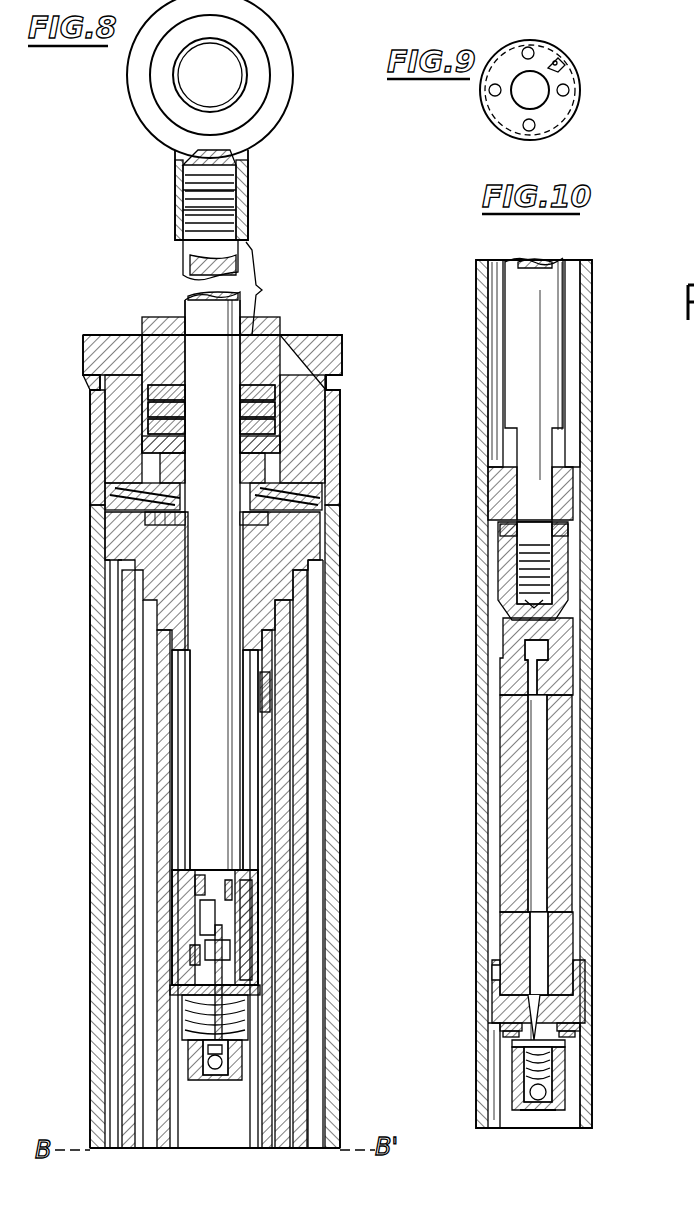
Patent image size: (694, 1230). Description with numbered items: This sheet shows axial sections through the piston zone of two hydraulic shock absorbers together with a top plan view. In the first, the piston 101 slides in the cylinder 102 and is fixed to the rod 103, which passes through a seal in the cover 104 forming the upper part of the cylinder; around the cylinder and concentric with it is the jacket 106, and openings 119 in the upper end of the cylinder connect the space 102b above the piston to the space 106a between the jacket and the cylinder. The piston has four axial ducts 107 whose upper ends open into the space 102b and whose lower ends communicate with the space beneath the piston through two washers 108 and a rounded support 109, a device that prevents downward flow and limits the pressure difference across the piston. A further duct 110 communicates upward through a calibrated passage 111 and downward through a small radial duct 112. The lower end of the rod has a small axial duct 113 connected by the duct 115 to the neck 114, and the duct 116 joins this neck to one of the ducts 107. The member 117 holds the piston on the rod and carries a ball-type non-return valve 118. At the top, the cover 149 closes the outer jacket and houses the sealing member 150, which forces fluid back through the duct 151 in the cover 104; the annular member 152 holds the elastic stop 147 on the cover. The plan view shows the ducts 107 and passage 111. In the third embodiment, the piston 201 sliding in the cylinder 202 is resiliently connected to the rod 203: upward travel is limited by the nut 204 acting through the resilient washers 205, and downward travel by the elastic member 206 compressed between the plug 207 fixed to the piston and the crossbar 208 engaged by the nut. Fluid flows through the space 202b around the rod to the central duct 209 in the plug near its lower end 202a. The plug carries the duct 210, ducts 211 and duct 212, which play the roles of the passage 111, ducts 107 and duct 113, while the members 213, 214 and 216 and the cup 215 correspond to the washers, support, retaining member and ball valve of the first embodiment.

In FIG. 8, the piston 101 is at (255, 870).
In FIG. 9, the piston 101 is at (575, 115).
In FIG. 8, the cylinder 102 is at (258, 770).
In FIG. 8, the space inside the cylinder above the piston 102b is at (252, 812).
In FIG. 8, the rod 103 is at (190, 262).
In FIG. 8, the cover 104 is at (118, 545).
In FIG. 8, the jacket 106 is at (132, 1148).
In FIG. 8, the space between the jacket and the cylinder 106a is at (300, 760).
In FIG. 8, the ducts 107 is at (190, 875).
In FIG. 9, the ducts 107 is at (530, 47).
In FIG. 8, the washers 108 is at (172, 990).
In FIG. 8, the rounded support 109 is at (185, 1012).
In FIG. 8, the duct 110 is at (250, 925).
In FIG. 8, the calibrated passage 111 is at (223, 879).
In FIG. 9, the calibrated passage 111 is at (565, 65).
In FIG. 8, the small radial duct 112 is at (218, 910).
In FIG. 8, the small diameter axial duct 113 is at (224, 1074).
In FIG. 8, the groove or necked-in portion 114 is at (220, 972).
In FIG. 8, the duct 115 is at (220, 941).
In FIG. 8, the duct 116 is at (192, 952).
In FIG. 8, the member 117 is at (190, 1065).
In FIG. 8, the ball-type non-return valve 118 is at (213, 1080).
In FIG. 8, the openings 119 is at (262, 688).
In FIG. 8, the elastic stop 147 is at (322, 495).
In FIG. 8, the cover 149 is at (120, 340).
In FIG. 8, the sealing member 150 is at (148, 420).
In FIG. 8, the duct 151 is at (300, 548).
In FIG. 8, the annular member 152 is at (242, 520).
In FIG. 10, the piston 201 is at (495, 480).
In FIG. 10, the cylinder 202 is at (586, 388).
In FIG. 10, the cylinder lower end 202a is at (575, 1122).
In FIG. 10, the space around the rod 202b is at (570, 430).
In FIG. 10, the rod 203 is at (535, 262).
In FIG. 10, the nut 204 is at (570, 566).
In FIG. 10, the resilient washers 205 is at (500, 528).
In FIG. 10, the elastic member 206 is at (560, 740).
In FIG. 10, the plug 207 is at (575, 935).
In FIG. 10, the crossbar 208 is at (575, 632).
In FIG. 10, the central duct 209 is at (540, 830).
In FIG. 10, the duct 210 is at (495, 983).
In FIG. 10, the ducts 211 is at (505, 1010).
In FIG. 10, the duct 212 is at (520, 1050).
In FIG. 10, the member 213 is at (592, 1022).
In FIG. 10, the member 214 is at (575, 1033).
In FIG. 10, the valve cup 215 is at (567, 1080).
In FIG. 10, the member 216 is at (527, 1112).